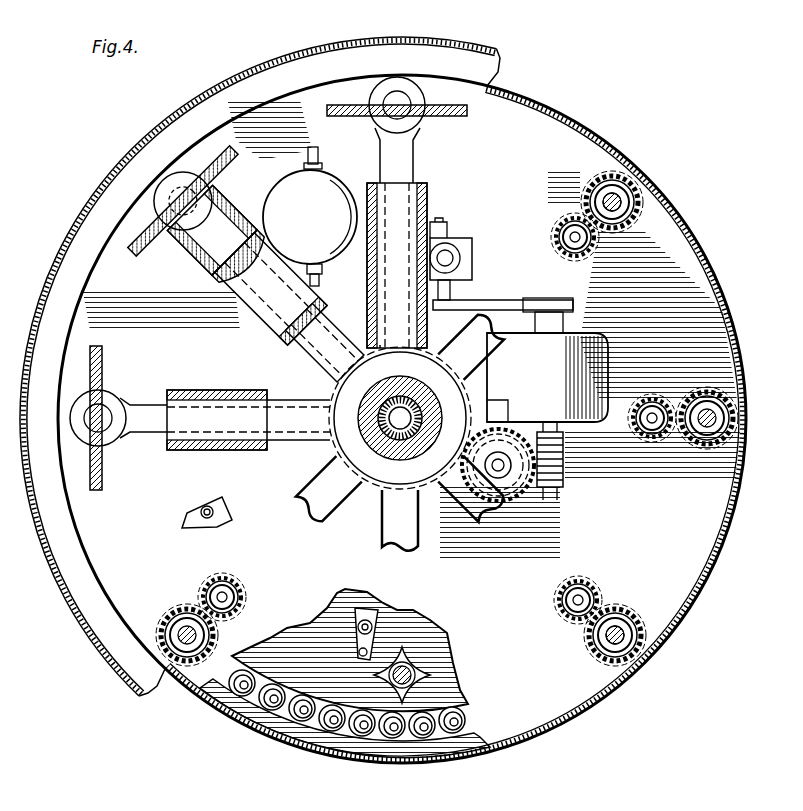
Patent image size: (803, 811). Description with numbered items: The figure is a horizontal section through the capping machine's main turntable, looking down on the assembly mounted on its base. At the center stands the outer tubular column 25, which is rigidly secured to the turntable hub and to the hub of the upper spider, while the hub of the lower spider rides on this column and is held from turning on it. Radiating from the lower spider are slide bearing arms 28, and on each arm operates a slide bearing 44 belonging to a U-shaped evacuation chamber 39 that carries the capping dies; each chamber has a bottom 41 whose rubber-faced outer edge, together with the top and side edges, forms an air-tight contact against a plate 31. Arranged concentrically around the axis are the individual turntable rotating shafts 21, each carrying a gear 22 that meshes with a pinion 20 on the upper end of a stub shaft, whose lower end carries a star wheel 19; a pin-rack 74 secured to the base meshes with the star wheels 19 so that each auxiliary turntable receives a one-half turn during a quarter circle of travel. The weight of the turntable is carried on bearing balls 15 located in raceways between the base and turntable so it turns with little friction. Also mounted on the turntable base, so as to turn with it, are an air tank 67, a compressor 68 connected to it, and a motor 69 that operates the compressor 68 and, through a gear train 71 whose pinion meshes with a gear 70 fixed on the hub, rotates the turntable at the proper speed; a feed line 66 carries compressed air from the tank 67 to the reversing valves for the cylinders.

The bearing balls 15 is at (393, 735).
The star wheel 19 is at (415, 672).
The pinion 20 is at (565, 255).
The individual turntable rotating shaft 21 is at (620, 210).
The gear 22 is at (605, 175).
The outer tubular column 25 is at (375, 427).
The slide bearing arm 28 is at (315, 347).
The plate 31 is at (462, 117).
The evacuation chamber 39 is at (226, 258).
The bottom 41 is at (205, 230).
The slide bearing 44 is at (428, 195).
The feed line 66 is at (315, 279).
The air tank 67 is at (293, 183).
The compressor 68 is at (447, 248).
The motor 69 is at (547, 377).
The gear 70 is at (365, 498).
The gear train 71 is at (492, 493).
The pin-rack 74 is at (220, 526).